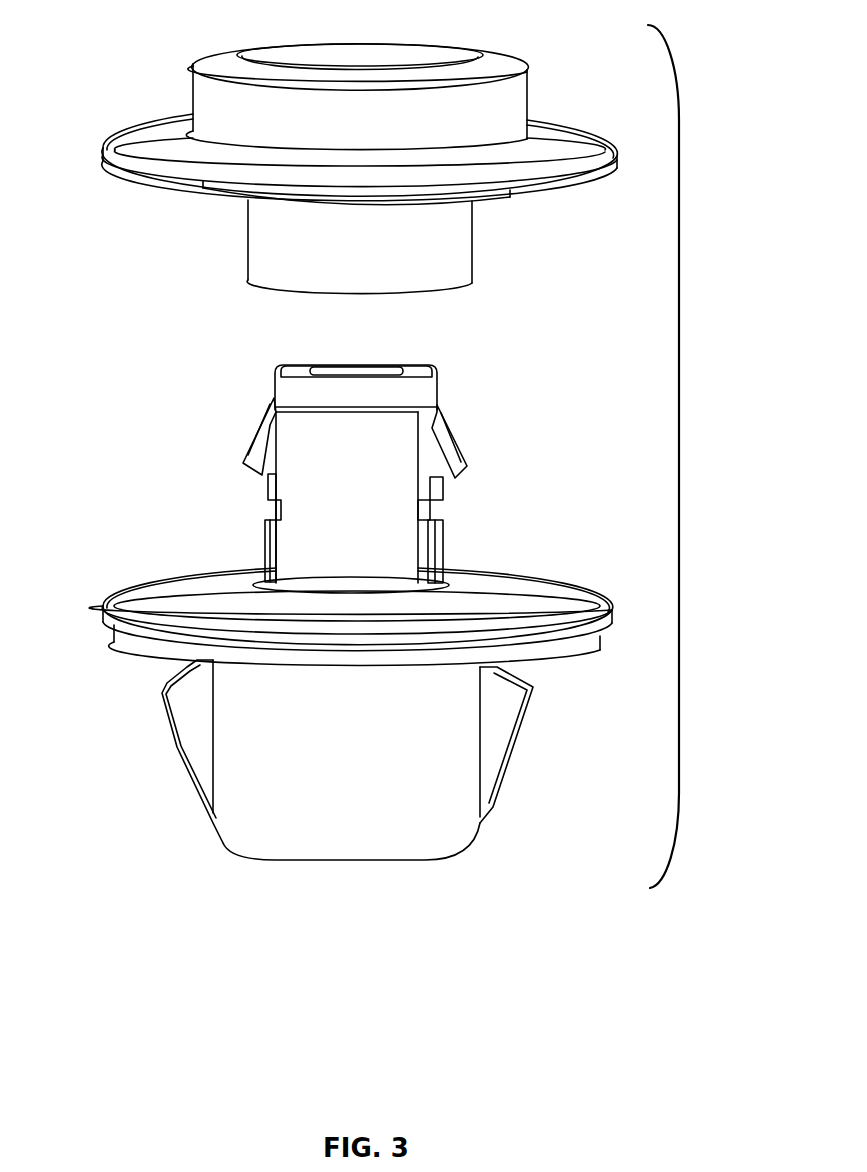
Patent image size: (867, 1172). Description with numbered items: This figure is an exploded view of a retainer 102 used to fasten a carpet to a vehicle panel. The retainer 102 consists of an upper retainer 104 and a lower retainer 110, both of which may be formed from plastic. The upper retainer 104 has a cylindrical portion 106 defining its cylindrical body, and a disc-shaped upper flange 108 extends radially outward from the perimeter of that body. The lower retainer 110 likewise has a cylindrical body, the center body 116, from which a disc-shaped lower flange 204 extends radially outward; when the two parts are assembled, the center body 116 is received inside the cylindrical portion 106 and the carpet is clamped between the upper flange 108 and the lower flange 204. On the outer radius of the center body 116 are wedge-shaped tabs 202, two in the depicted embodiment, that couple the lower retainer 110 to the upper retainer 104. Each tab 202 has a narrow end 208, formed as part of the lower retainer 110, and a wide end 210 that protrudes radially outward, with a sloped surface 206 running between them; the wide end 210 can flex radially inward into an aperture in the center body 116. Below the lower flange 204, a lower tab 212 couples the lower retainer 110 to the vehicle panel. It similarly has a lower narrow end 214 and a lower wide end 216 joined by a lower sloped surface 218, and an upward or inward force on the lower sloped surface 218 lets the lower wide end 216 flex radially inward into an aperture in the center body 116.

The retainer 102 is at (679, 267).
The upper retainer 104 is at (330, 153).
The cylindrical portion 106 is at (208, 98).
The upper flange 108 is at (168, 137).
The lower retainer 110 is at (323, 792).
The center body 116 is at (357, 547).
The tab 202 is at (336, 496).
The lower flange 204 is at (203, 583).
The sloped surface 206 is at (455, 438).
The narrow end 208 is at (270, 425).
The wide end 210 is at (253, 463).
The lower tab 212 is at (497, 732).
The lower narrow end 214 is at (482, 803).
The lower wide end 216 is at (513, 702).
The lower sloped surface 218 is at (175, 750).